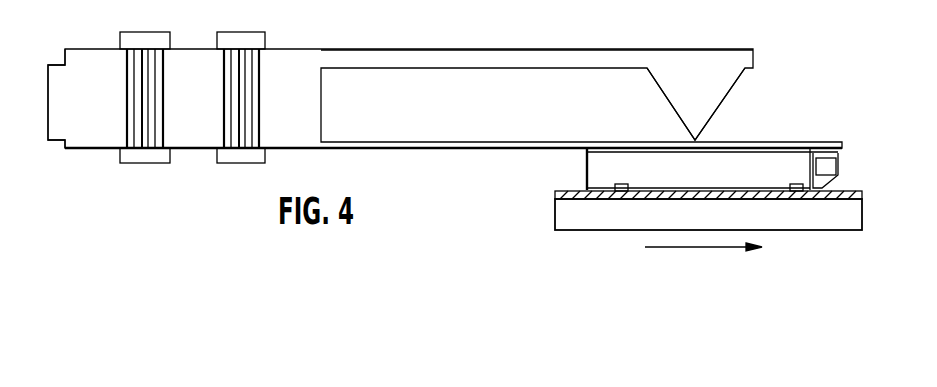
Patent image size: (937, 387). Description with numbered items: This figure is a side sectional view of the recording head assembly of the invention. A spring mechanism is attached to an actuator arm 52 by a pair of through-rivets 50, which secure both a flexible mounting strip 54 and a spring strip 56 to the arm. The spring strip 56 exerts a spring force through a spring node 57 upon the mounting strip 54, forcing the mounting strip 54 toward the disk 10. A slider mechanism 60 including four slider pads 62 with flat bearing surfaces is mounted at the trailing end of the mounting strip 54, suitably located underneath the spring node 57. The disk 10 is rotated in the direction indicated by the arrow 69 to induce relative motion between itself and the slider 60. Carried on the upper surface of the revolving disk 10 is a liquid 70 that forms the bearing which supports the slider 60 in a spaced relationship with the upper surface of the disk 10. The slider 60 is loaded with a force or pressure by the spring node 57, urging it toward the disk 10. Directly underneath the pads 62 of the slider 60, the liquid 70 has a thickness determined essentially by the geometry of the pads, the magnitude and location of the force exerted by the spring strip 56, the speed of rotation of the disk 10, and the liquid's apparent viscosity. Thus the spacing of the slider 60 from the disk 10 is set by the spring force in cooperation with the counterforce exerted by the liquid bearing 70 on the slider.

The disk 10 is at (553, 222).
The through-rivets 50 is at (230, 32).
The actuator arm 52 is at (90, 48).
The flexible mounting strip 54 is at (430, 150).
The spring strip 56 is at (447, 50).
The spring node 57 is at (698, 140).
The slider mechanism 60 is at (585, 157).
The slider pads 62 is at (620, 189).
The arrow 69 is at (672, 255).
The liquid 70 is at (845, 193).